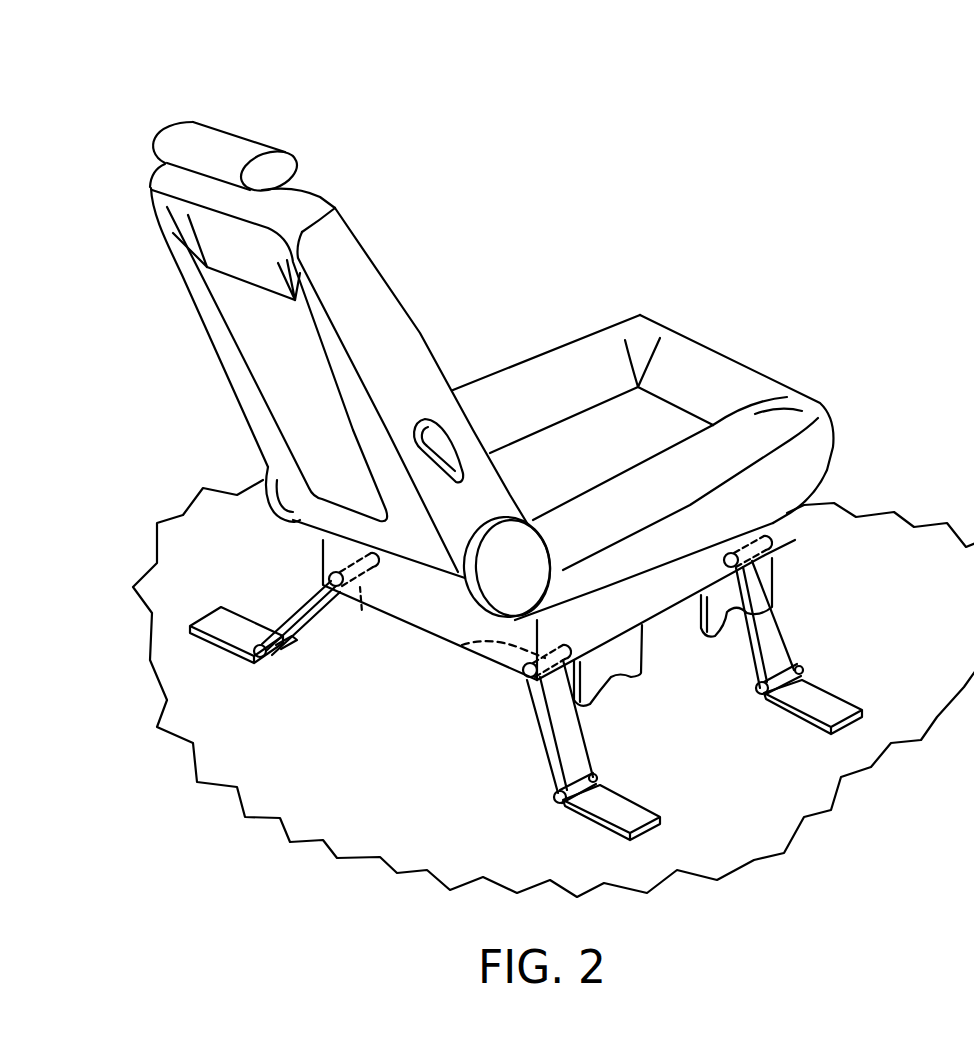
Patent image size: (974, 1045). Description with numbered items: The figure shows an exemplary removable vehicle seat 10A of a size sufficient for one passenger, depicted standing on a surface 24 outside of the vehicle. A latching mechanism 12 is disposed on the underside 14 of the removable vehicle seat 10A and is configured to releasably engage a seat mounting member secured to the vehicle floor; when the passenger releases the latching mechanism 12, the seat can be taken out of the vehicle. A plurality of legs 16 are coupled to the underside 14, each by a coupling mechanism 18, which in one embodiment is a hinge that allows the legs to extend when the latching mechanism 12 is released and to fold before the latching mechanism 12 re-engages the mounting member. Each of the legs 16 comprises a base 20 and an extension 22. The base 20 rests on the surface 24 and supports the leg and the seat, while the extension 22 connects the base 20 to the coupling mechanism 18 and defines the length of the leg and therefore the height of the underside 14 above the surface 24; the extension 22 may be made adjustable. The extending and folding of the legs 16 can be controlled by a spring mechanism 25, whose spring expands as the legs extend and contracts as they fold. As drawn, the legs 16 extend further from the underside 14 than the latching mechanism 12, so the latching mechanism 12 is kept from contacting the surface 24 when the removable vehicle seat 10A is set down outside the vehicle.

The removable vehicle seat 10A is at (499, 371).
The latching mechanism 12 is at (673, 669).
The underside 14 is at (559, 628).
The plurality of legs 16 is at (553, 679).
The coupling mechanism 18 is at (520, 677).
The base 20 is at (215, 618).
The extension 22 is at (560, 743).
The surface 24 is at (397, 816).
The spring mechanism 25 is at (440, 633).